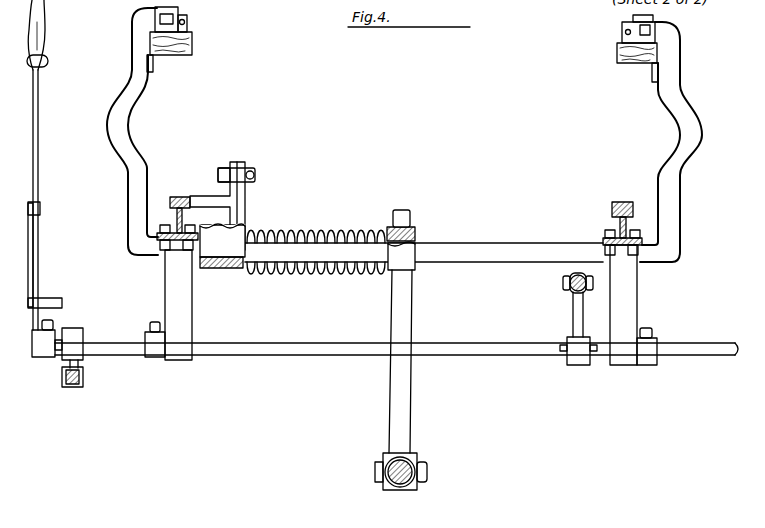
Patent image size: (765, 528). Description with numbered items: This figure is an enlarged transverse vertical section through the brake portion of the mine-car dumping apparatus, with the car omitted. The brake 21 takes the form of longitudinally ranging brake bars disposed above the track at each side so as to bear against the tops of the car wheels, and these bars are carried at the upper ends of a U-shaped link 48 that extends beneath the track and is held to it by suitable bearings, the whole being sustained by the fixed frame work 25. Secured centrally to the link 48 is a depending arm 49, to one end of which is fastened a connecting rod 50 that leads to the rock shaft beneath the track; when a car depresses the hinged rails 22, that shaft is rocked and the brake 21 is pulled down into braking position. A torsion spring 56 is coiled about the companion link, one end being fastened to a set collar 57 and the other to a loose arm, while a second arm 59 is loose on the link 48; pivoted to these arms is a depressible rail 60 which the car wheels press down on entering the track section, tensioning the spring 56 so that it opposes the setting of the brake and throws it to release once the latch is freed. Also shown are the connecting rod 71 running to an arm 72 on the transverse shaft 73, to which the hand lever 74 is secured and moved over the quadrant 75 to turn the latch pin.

The brake 21 is at (192, 42).
The hinged rails 22 is at (179, 197).
The frame work 25 is at (193, 321).
The U-shaped link 48 is at (133, 148).
The depending arm 49 is at (414, 305).
The connecting rod 50 is at (402, 488).
The torsion spring 56 is at (304, 228).
The set collar 57 is at (416, 232).
The second arm 59 is at (246, 210).
The depressible rail 60 is at (232, 168).
The connecting rod 71 is at (564, 284).
The arm 72 is at (573, 314).
The transverse shaft 73 is at (527, 356).
The hand lever 74 is at (40, 186).
The quadrant 75 is at (34, 295).